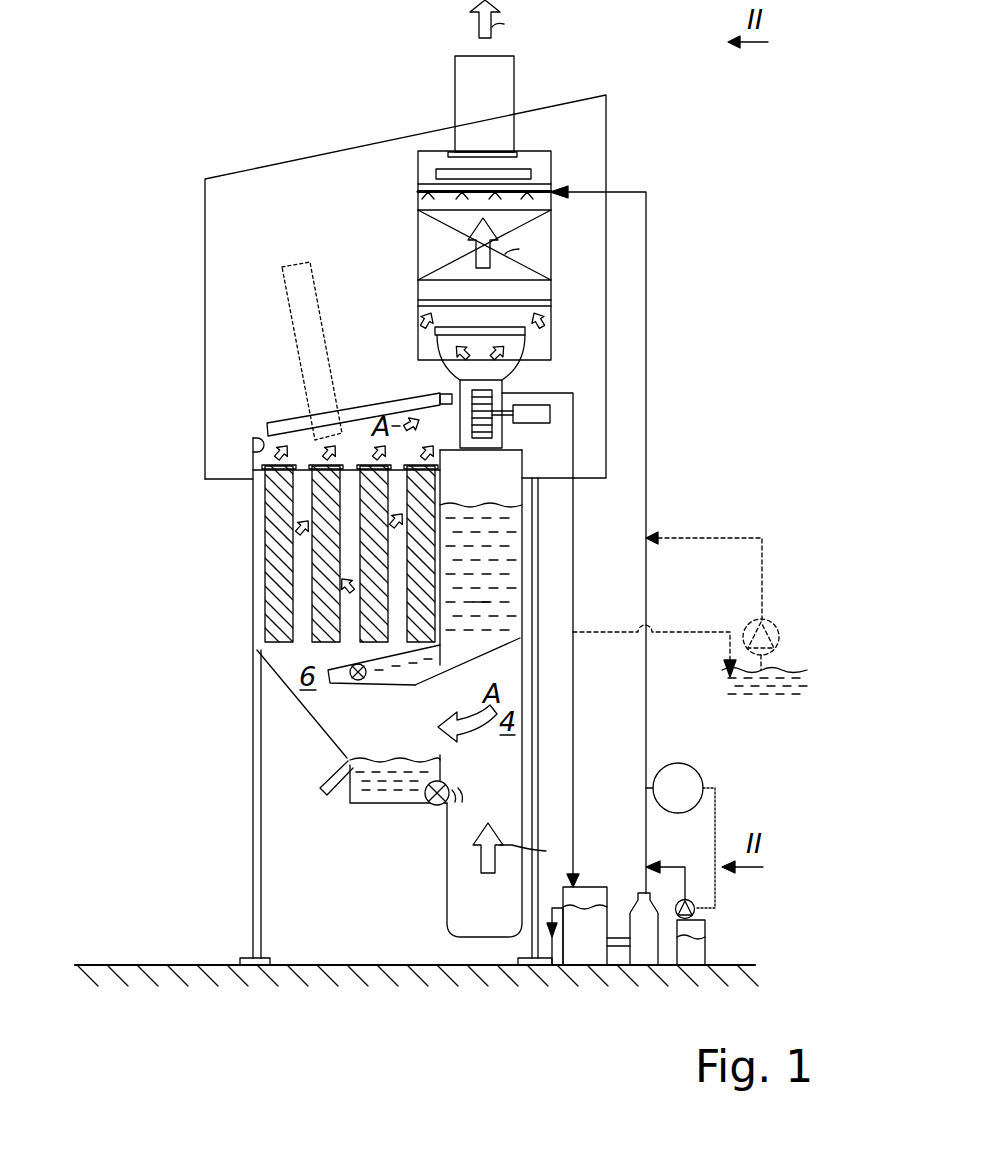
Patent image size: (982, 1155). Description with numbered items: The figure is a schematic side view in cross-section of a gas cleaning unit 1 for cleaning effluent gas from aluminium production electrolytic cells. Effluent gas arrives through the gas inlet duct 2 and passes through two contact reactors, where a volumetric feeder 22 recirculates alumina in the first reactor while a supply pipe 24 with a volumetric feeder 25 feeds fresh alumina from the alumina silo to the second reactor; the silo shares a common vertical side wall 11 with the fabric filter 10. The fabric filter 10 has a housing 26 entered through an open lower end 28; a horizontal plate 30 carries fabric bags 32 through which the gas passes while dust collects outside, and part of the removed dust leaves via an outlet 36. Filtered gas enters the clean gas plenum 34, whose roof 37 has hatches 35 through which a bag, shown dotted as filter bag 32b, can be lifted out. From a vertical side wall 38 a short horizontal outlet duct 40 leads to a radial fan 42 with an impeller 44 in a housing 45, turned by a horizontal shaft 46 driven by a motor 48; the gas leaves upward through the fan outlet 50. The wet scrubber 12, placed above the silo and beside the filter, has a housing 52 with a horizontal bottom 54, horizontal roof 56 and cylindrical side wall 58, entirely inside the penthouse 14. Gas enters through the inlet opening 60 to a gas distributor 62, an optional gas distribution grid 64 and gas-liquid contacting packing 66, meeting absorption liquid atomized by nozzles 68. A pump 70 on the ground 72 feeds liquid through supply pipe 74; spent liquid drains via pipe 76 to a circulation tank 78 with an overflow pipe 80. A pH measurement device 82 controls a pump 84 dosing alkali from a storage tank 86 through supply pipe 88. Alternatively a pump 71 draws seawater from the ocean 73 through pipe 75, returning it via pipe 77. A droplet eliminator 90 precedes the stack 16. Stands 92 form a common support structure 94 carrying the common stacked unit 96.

The gas cleaning unit 1 is at (213, 127).
The gas inlet duct 2 is at (447, 875).
The fabric filter 10 is at (240, 567).
The common vertical side wall 11 is at (443, 540).
The wet scrubber 12 is at (420, 140).
The gas cleaning unit penthouse 14 is at (315, 155).
The stack 16 is at (517, 77).
The volumetric feeder 22 is at (428, 800).
The supply pipe 24 is at (338, 686).
The volumetric feeder 25 is at (365, 680).
The housing 26 is at (253, 622).
The open lower end 28 is at (262, 678).
The horizontal plate 30 is at (303, 468).
The fabric bags 32 is at (265, 512).
The filter bag in removal position 32b is at (283, 300).
The clean gas plenum 34 is at (253, 450).
The hatches 35 is at (303, 412).
The outlet 36 is at (325, 788).
The roof 37 is at (257, 438).
The vertical side wall 38 is at (443, 403).
The outlet duct 40 is at (440, 398).
The radial fan 42 is at (516, 437).
The impeller 44 is at (495, 396).
The housing 45 is at (462, 382).
The horizontal shaft 46 is at (497, 410).
The motor 48 is at (550, 412).
The fan outlet 50 is at (553, 368).
The housing 52 is at (570, 166).
The horizontal bottom 54 is at (438, 355).
The horizontal roof 56 is at (440, 152).
The cylindrical side wall 58 is at (551, 232).
The inlet opening 60 is at (433, 348).
The gas distributor 62 is at (514, 316).
The gas distribution grid 64 is at (443, 298).
The gas-liquid contacting packing 66 is at (523, 258).
The nozzles 68 is at (428, 193).
The pump 70 is at (660, 950).
The pump 71 is at (777, 620).
The ground 72 is at (130, 965).
The ocean 73 is at (800, 665).
The supply pipe 74 is at (646, 495).
The pipe 75 is at (718, 536).
The pipe 76 is at (573, 695).
The pipe 77 is at (683, 632).
The circulation tank 78 is at (597, 887).
The overflow pipe 80 is at (552, 918).
The pH measurement device 82 is at (678, 763).
The pump 84 is at (695, 910).
The storage tank 86 is at (705, 958).
The supply pipe 88 is at (685, 867).
The droplet eliminator 90 is at (520, 169).
The stands 92 is at (253, 858).
The common support structure 94 is at (240, 796).
The common stacked unit 96 is at (240, 493).